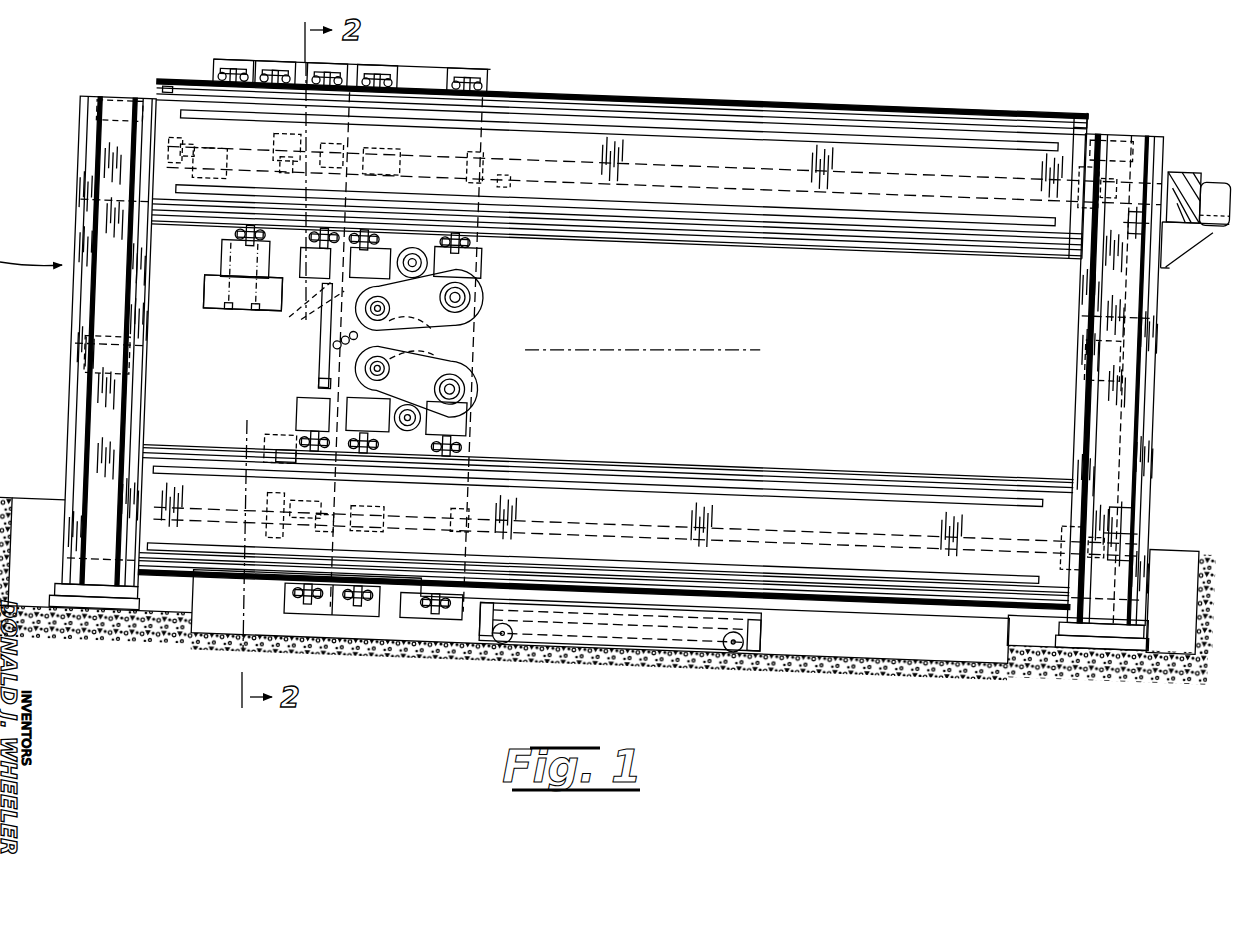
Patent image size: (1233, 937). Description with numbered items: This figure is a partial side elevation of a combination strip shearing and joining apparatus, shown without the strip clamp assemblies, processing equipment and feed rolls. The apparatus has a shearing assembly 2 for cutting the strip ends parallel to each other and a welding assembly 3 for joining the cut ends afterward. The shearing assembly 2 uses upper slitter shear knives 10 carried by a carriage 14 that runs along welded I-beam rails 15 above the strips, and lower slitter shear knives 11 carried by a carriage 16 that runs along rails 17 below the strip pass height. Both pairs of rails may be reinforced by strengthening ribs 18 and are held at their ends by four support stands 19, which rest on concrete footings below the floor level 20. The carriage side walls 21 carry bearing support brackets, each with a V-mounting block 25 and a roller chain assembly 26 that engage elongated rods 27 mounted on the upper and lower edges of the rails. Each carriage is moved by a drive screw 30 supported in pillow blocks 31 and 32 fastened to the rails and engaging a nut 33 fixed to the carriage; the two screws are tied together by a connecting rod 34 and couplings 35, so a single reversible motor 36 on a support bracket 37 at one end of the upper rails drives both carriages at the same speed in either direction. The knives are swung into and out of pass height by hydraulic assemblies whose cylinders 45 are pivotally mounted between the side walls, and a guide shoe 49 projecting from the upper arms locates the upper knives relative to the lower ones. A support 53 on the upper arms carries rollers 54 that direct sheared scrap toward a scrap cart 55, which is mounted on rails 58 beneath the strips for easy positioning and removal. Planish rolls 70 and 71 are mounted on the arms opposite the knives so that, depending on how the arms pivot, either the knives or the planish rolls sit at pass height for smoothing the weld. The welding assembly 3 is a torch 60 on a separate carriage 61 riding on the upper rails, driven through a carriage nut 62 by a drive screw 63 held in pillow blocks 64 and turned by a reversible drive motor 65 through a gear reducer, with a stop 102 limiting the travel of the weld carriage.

The shearing assembly 2 is at (422, 343).
The welding assembly 3 is at (226, 315).
The upper slitter shear knives 10 is at (448, 326).
The lower slitter shear knives 11 is at (335, 375).
The carriage 14 is at (467, 66).
The I-beam rails 15 is at (1068, 145).
The carriage 16 is at (397, 622).
The rails 17 is at (925, 570).
The strengthening ribs 18 is at (767, 130).
The support stands 19 is at (76, 312).
The floor level 20 is at (8, 496).
The carriage side walls 21 is at (486, 242).
The V-mounting block 25 is at (230, 62).
The roller chain assembly 26 is at (218, 67).
The elongated rods 27 is at (616, 96).
The drive screw 30 is at (682, 163).
The pillow block 31 is at (345, 506).
The pillow block 32 is at (1076, 198).
The nut 33 is at (482, 151).
The connecting rod 34 is at (1135, 318).
The couplings 35 is at (1156, 238).
The reversible motor 36 is at (1187, 186).
The support bracket 37 is at (1204, 236).
The cylinders 45 is at (300, 467).
The guide shoe 49 is at (292, 318).
The support 53 is at (329, 327).
The rollers 54 is at (342, 343).
The scrap cart 55 is at (482, 632).
The rails 58 is at (333, 642).
The torch 60 is at (224, 296).
The carriage 61 is at (207, 230).
The carriage nut 62 is at (284, 147).
The drive screw 63 is at (242, 147).
The pillow blocks 64 is at (168, 148).
The reversible drive motor 65 is at (1215, 190).
The planish roll 70 is at (492, 300).
The planish roll 71 is at (482, 393).
The stop 102 is at (514, 184).